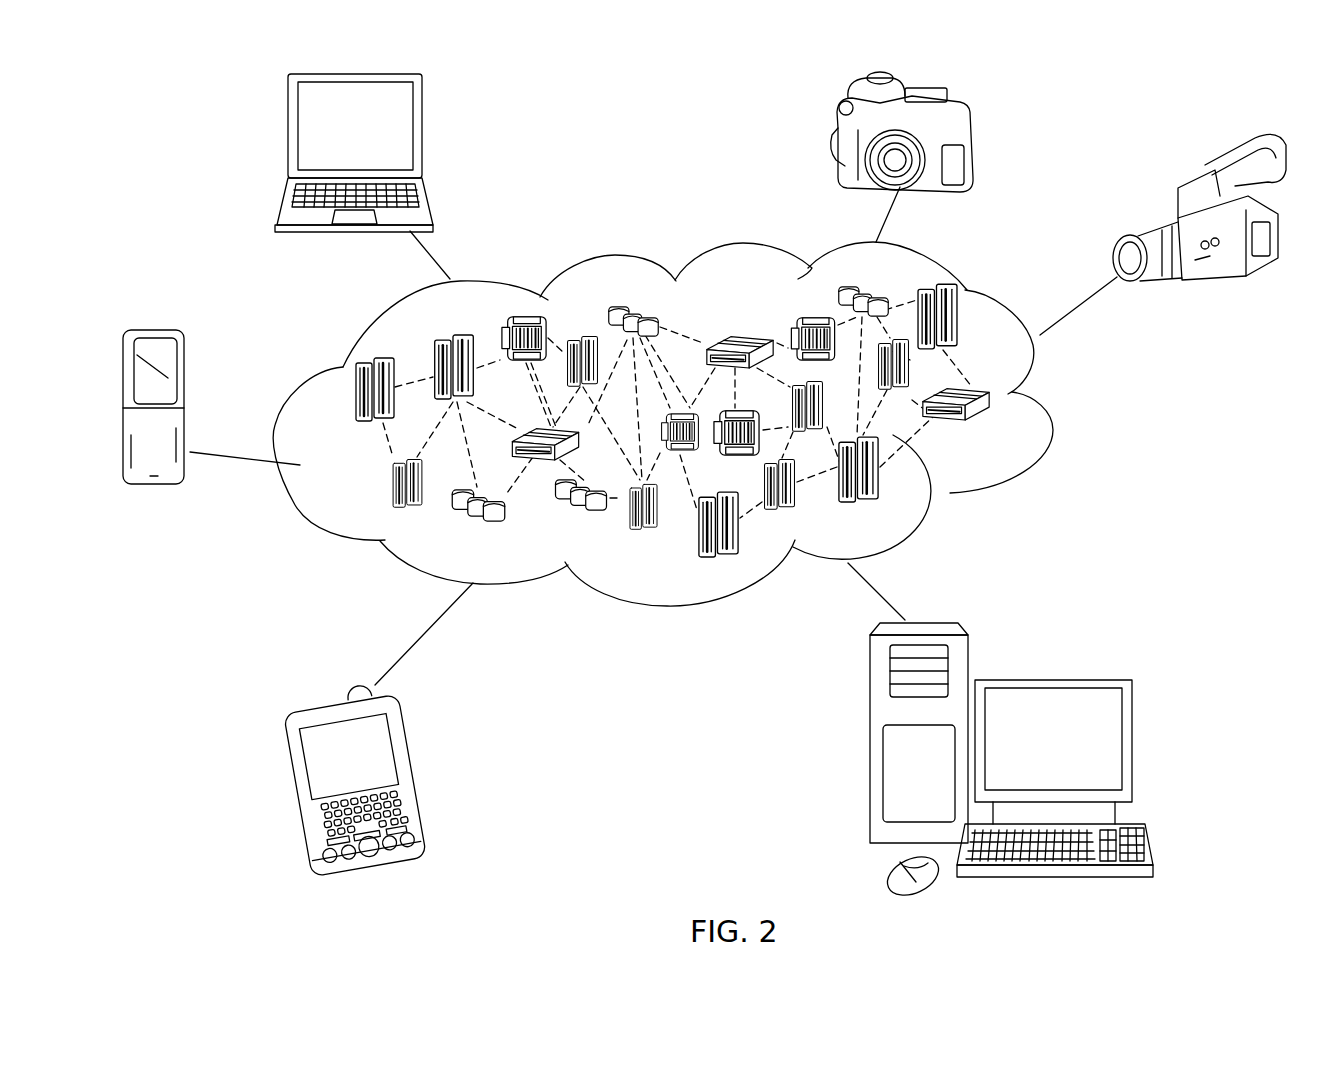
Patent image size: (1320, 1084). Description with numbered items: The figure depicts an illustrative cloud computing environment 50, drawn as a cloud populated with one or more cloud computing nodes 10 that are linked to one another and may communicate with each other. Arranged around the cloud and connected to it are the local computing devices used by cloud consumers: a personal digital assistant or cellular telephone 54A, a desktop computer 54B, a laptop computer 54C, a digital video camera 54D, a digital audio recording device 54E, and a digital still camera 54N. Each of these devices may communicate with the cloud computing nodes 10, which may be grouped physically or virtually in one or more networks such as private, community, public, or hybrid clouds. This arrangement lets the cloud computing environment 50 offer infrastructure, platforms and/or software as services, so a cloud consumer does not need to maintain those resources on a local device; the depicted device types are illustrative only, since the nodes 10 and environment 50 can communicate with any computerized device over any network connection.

The cloud computing node 10 is at (1005, 432).
The cloud computing environment 50 is at (1053, 402).
The personal digital assistant or cellular telephone 54A is at (412, 768).
The desktop computer 54B is at (1050, 677).
The laptop computer 54C is at (422, 135).
The digital video camera 54D is at (1217, 274).
The digital audio recording device 54E is at (143, 487).
The digital still camera 54N is at (832, 143).